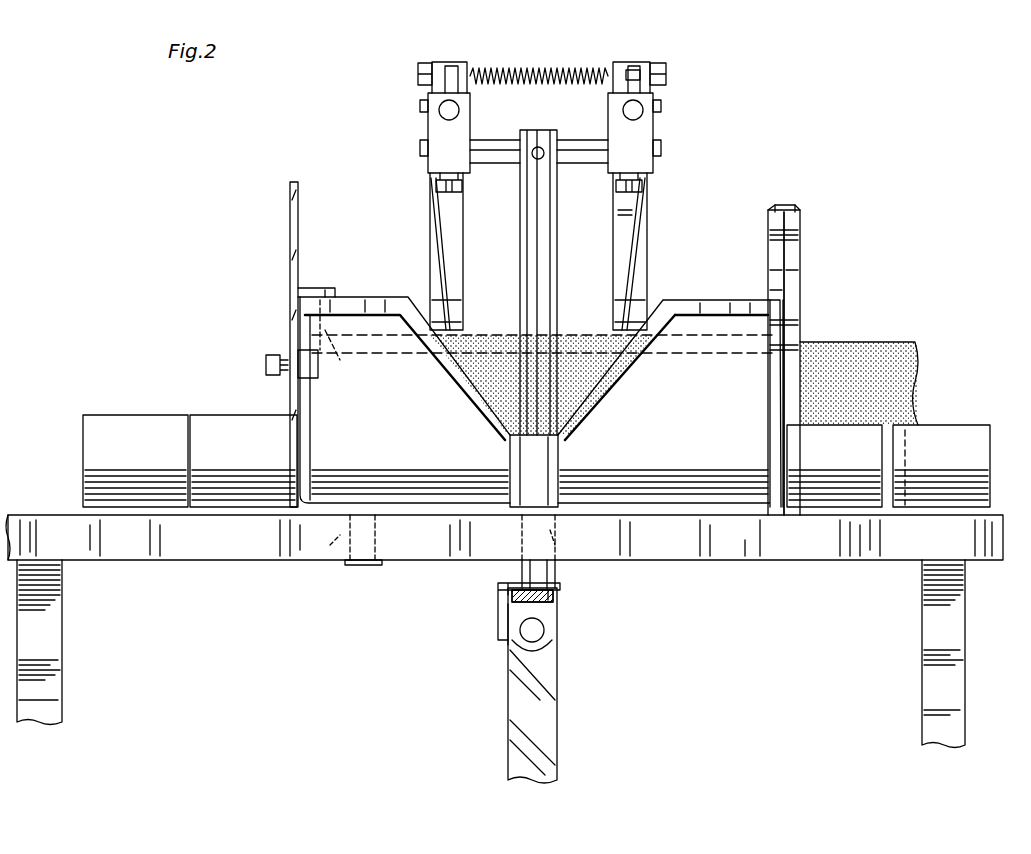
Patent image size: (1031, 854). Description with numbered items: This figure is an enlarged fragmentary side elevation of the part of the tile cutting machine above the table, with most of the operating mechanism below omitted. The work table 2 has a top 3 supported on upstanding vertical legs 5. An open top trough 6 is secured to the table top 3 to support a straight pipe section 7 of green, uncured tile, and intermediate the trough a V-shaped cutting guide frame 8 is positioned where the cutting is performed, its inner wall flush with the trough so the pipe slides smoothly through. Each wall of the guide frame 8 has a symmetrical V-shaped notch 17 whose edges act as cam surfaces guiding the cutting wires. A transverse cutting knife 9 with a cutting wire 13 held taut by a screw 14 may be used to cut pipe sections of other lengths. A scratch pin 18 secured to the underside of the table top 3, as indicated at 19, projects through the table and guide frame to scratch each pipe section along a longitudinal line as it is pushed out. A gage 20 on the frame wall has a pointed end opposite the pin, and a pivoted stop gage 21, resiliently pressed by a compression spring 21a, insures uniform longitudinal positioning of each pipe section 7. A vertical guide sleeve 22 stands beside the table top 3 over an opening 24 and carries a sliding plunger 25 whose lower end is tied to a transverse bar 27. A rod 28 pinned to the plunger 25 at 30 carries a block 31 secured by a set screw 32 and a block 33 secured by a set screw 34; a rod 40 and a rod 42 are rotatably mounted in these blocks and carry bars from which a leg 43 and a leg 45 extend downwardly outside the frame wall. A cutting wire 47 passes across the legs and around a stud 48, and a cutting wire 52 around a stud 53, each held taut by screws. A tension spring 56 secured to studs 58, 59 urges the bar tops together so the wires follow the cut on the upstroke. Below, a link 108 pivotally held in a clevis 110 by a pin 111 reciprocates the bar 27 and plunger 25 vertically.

The work table 2 is at (860, 572).
The top 3 is at (755, 566).
The vertical legs 5 is at (45, 606).
The open top trough 6 is at (127, 422).
The pipe section 7 is at (492, 338).
The cutting guide frame 8 is at (298, 450).
The transverse cutting knife 9 is at (811, 264).
The cutting wire 13 is at (788, 295).
The screw 14 is at (802, 214).
The V-shaped notch 17 is at (580, 405).
The scratch pin 18 is at (308, 560).
The securing of scratch pin 19 is at (350, 568).
The gage 20 is at (315, 288).
The gage 21 is at (288, 222).
The compression spring 21a is at (276, 378).
The vertical guide sleeve 22 is at (508, 455).
The opening 24 is at (562, 540).
The plunger 25 is at (552, 270).
The transverse bar 27 is at (496, 592).
The rod 28 is at (490, 145).
The pin 30 is at (542, 145).
The block 31 is at (655, 132).
The set screw 32 is at (646, 187).
The block 33 is at (425, 128).
The set screw 34 is at (434, 185).
The rod 40 is at (623, 109).
The rod 42 is at (460, 104).
The leg 43 is at (620, 210).
The leg 45 is at (452, 241).
The cutting wire 47 is at (645, 243).
The stud 48 is at (668, 74).
The cutting wire 52 is at (438, 250).
The stud 53 is at (418, 72).
The tension spring 56 is at (498, 66).
The stud 58 is at (635, 70).
The stud 59 is at (445, 82).
The link 108 is at (558, 697).
The clevis 110 is at (548, 626).
The pin 111 is at (520, 632).